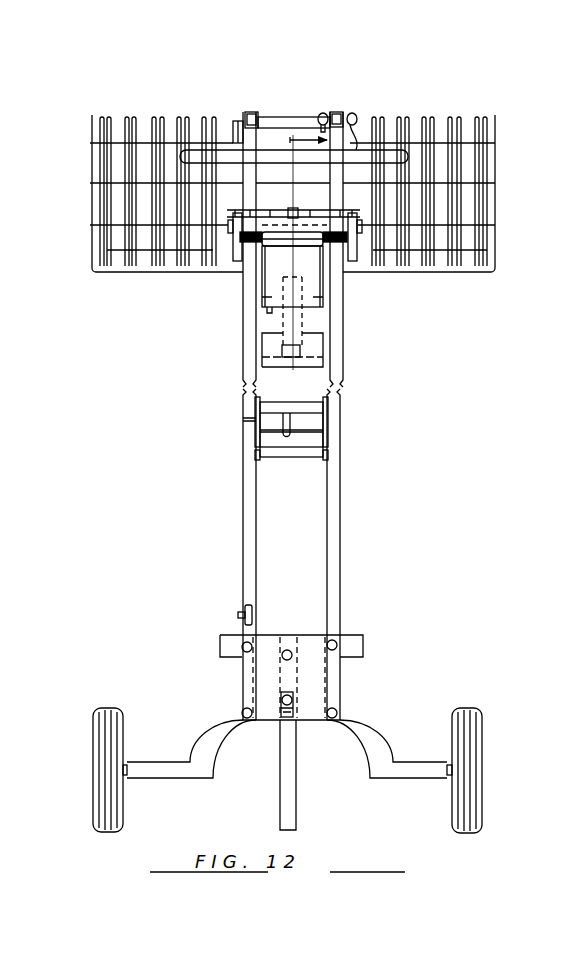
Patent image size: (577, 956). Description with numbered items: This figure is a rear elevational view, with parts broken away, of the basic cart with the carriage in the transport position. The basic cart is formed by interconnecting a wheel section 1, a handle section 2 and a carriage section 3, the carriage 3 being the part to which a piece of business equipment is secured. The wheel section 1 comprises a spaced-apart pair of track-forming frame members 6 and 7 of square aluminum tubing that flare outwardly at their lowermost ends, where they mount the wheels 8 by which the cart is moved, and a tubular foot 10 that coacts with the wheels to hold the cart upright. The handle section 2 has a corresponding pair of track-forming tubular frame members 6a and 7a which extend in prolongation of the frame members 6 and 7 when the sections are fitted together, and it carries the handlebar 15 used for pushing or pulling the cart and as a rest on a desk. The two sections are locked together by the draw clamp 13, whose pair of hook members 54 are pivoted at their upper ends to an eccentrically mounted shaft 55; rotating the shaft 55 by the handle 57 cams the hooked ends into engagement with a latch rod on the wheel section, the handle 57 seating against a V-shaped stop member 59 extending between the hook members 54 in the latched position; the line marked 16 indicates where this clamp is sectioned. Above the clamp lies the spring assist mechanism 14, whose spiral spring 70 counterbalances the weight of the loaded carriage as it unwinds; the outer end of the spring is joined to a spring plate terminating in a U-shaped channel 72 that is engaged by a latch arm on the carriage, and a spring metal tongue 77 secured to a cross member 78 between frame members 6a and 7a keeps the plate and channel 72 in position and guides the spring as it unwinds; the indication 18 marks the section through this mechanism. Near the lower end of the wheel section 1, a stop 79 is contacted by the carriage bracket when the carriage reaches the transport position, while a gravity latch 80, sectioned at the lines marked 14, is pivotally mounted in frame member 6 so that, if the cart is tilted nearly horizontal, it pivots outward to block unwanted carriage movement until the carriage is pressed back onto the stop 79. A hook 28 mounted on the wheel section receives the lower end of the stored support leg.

The wheel section 1 is at (258, 768).
The handle section 2 is at (365, 290).
The carriage section 3 is at (507, 167).
The track forming frame member 6 is at (240, 470).
The track forming tubular frame member 6a is at (246, 312).
The track forming frame member 7 is at (342, 515).
The track forming tubular frame member 7a is at (339, 315).
The wheel 8 is at (122, 730).
The foot 10 is at (297, 813).
The draw clamp 13 is at (226, 423).
The spring assist mechanism 14 is at (243, 592).
The handlebar 15 is at (412, 157).
The section line 16 is at (272, 391).
The section line 18 is at (283, 368).
The hook 28 is at (295, 695).
The hook member 54 is at (260, 438).
The shaft 55 is at (330, 403).
The handle 57 is at (260, 416).
The V-shaped stop member 59 is at (308, 435).
The spiral spring 70 is at (275, 258).
The U-shaped channel 72 is at (275, 312).
The spring metal tongue 77 is at (263, 345).
The cross member 78 is at (328, 358).
The stop 79 is at (358, 640).
The gravity latch 80 is at (238, 617).